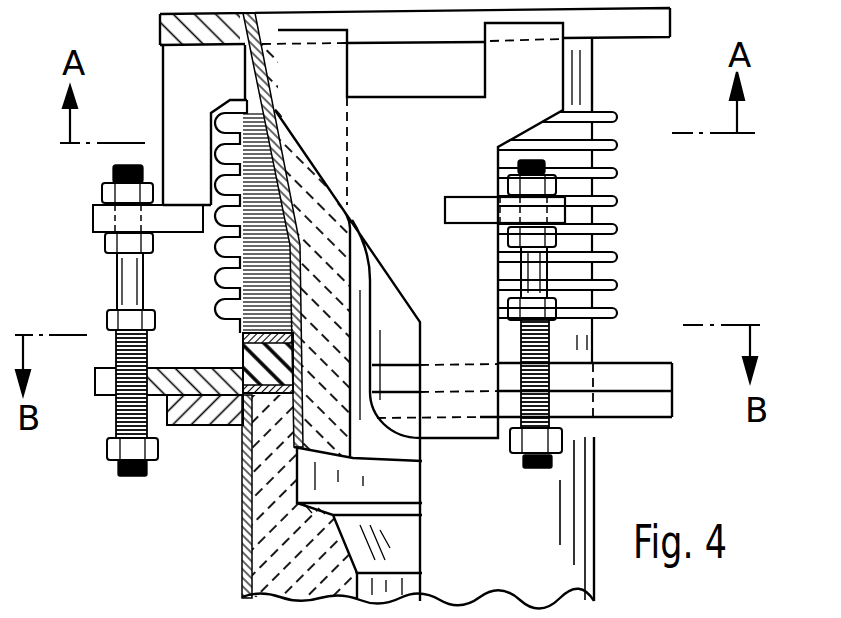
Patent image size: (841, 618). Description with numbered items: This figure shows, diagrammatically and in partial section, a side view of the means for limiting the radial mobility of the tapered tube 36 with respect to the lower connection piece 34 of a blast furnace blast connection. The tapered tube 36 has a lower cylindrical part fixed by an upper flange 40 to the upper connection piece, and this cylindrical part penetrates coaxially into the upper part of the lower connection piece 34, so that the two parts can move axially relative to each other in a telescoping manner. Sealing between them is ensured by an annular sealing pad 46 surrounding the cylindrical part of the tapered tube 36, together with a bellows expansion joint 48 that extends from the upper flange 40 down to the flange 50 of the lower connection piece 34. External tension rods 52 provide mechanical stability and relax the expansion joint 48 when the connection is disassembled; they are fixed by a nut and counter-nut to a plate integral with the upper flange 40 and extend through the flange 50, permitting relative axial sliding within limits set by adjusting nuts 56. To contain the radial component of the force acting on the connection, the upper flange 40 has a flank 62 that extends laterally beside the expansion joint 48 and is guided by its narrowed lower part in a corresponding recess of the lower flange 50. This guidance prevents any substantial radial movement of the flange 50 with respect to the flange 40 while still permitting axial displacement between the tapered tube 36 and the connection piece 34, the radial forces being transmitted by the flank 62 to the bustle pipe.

The lower connection piece 34 is at (590, 493).
The tapered tube 36 is at (246, 460).
The upper flange 40 is at (670, 17).
The annular sealing pad 46 is at (242, 350).
The bellows expansion joint 48 is at (608, 230).
The flange of the lower connection piece 50 is at (662, 398).
The tension rods 52 is at (124, 262).
The adjusting nuts 56 is at (110, 443).
The flank 62 is at (547, 90).